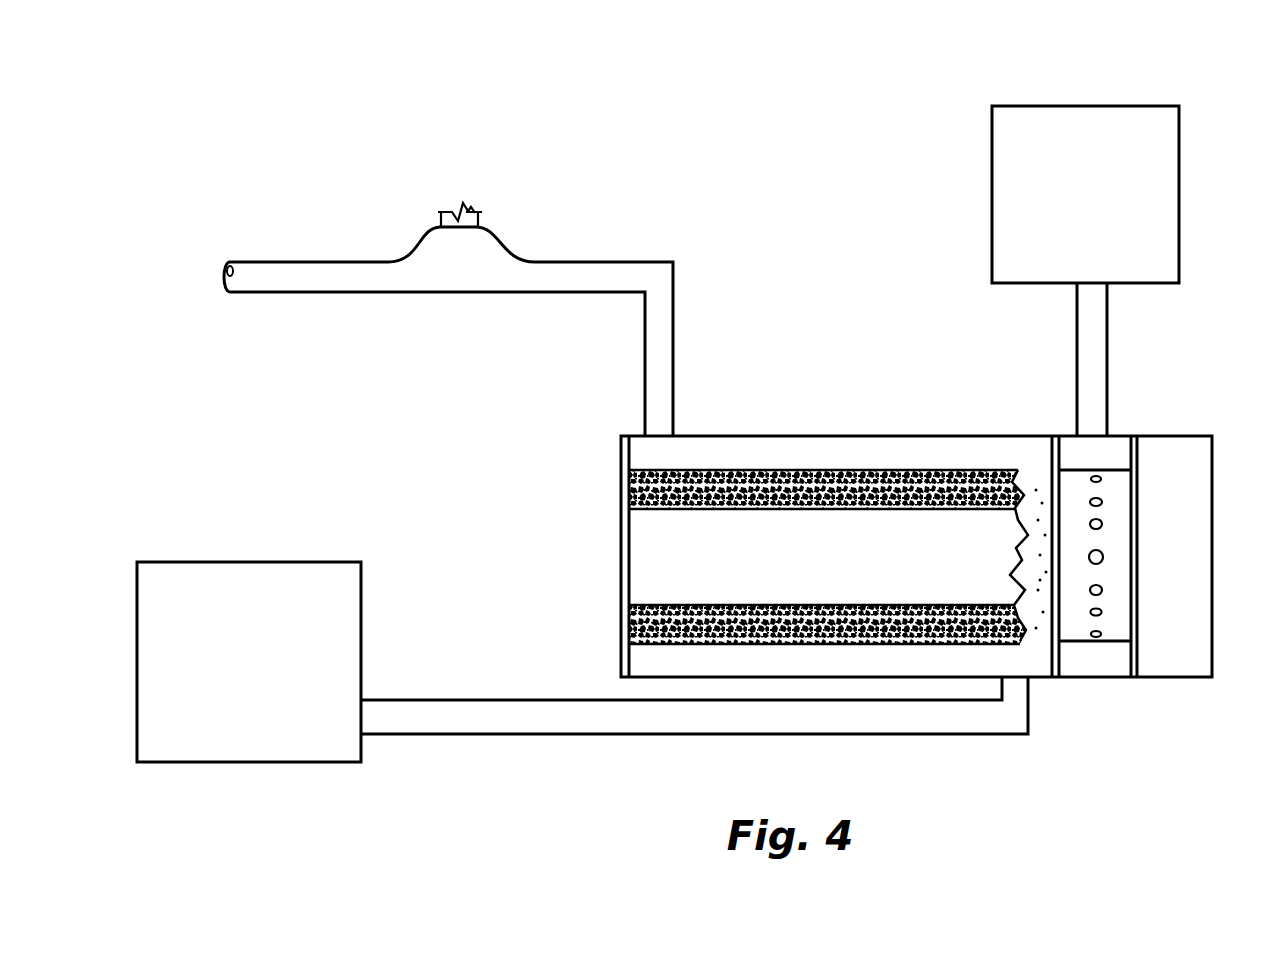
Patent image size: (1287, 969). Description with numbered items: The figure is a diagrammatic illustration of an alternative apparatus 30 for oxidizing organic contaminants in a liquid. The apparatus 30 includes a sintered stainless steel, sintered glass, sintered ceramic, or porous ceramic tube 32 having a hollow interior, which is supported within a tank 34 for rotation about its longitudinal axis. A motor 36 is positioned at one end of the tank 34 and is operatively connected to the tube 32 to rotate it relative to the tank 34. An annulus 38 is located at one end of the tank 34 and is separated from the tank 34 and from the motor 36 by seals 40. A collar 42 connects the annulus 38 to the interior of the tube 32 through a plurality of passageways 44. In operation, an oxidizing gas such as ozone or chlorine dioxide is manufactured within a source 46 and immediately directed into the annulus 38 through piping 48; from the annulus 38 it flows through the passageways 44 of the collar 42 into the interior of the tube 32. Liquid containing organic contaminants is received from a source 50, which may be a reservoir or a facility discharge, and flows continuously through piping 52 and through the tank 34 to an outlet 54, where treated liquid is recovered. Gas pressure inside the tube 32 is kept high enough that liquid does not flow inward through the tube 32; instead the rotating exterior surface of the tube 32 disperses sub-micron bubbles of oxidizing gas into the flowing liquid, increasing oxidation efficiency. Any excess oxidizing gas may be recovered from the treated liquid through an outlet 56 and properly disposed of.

The apparatus 30 is at (772, 66).
The tube 32 is at (883, 432).
The tank 34 is at (950, 406).
The motor 36 is at (1175, 592).
The annulus 38 is at (1134, 449).
The seals 40 is at (1043, 410).
The collar 42 is at (1143, 533).
The passageways 44 is at (1104, 592).
The source 46 is at (1216, 172).
The piping 48 is at (1144, 318).
The source 50 is at (272, 528).
The piping 52 is at (460, 766).
The outlet 54 is at (645, 350).
The outlet 56 is at (440, 222).